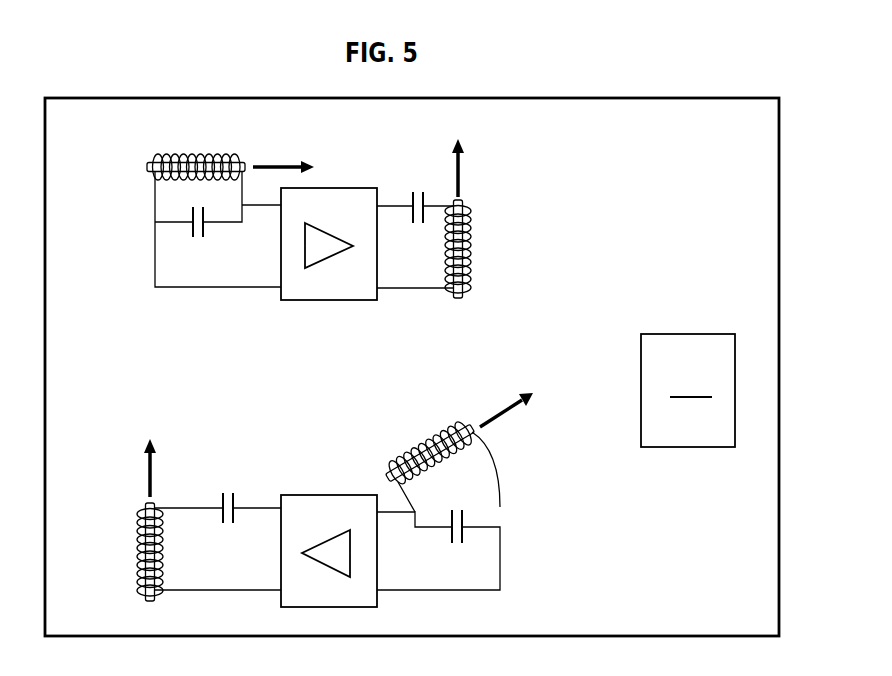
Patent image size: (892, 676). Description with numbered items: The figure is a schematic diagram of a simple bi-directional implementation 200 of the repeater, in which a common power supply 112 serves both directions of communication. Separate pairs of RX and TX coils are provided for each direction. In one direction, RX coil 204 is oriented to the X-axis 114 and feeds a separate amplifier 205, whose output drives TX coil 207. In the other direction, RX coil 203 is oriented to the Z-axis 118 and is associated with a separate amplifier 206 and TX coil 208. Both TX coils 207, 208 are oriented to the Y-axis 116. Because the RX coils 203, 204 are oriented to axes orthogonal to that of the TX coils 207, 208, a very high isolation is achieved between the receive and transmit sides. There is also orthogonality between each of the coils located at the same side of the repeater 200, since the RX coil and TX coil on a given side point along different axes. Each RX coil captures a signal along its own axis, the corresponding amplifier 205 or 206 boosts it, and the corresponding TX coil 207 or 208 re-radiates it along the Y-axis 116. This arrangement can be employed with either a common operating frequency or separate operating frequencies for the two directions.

The bi-directional implementation 200 is at (703, 80).
The common power supply 112 is at (688, 390).
The X-axis 114 is at (275, 160).
The Y-axis 116 is at (459, 165).
The Z-axis 118 is at (498, 412).
The RX coil 203 is at (428, 443).
The RX coil 204 is at (197, 157).
The amplifier 205 is at (338, 188).
The amplifier 206 is at (337, 495).
The TX coil 207 is at (470, 252).
The TX coil 208 is at (140, 527).